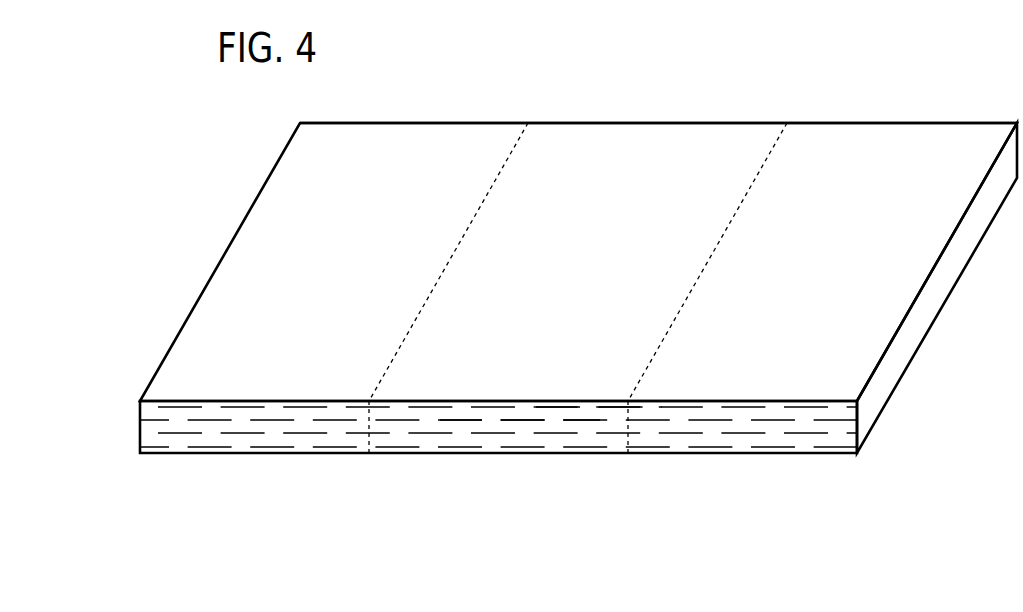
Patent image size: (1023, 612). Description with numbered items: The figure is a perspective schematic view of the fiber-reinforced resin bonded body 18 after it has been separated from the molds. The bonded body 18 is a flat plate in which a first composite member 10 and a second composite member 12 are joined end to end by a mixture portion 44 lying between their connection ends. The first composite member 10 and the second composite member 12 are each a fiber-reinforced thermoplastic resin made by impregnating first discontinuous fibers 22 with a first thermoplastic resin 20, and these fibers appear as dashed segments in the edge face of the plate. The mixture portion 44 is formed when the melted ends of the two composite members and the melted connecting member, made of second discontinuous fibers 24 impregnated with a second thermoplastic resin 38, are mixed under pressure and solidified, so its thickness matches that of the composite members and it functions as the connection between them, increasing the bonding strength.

The fiber-reinforced resin bonded body 18 is at (972, 67).
The first composite member 10 is at (435, 127).
The mixture portion 44 is at (629, 127).
The second composite member 12 is at (867, 127).
The first thermoplastic resin 20 is at (308, 442).
The first discontinuous fibers 22 is at (272, 420).
The second discontinuous fibers 24 is at (528, 420).
The second thermoplastic resin 38 is at (587, 412).